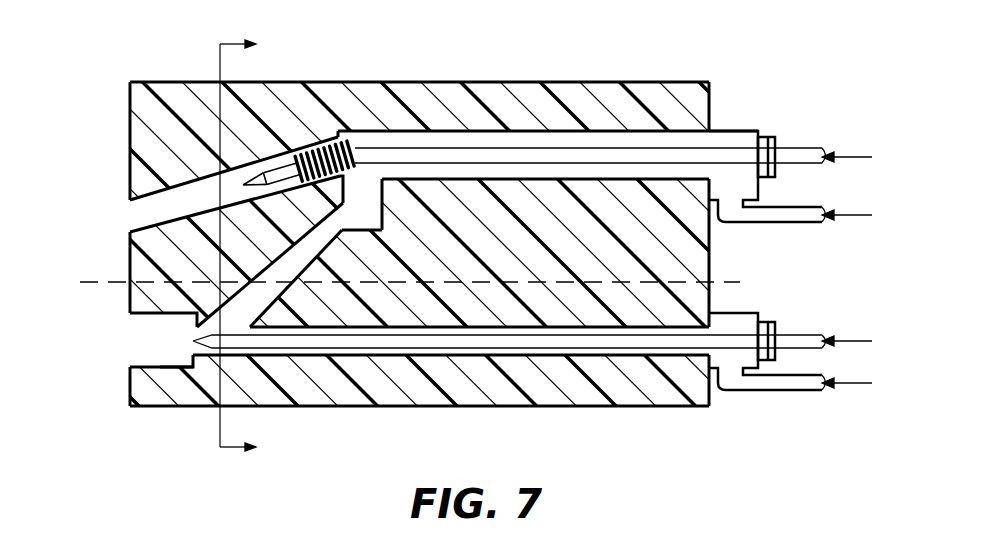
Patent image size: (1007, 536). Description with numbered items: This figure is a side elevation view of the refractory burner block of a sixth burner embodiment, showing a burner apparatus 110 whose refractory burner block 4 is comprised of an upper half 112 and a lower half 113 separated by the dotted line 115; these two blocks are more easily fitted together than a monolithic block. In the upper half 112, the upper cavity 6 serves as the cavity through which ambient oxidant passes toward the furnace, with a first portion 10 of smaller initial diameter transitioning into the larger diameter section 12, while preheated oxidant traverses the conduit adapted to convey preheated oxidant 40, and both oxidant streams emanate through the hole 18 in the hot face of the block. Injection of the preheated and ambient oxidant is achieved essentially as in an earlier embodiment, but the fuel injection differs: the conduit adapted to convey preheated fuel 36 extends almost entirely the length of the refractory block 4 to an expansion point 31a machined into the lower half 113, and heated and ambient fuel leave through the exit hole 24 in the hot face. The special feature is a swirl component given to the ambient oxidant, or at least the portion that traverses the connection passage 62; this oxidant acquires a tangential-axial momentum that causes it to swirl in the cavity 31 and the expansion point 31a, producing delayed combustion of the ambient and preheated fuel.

The burner apparatus 110 is at (503, 238).
The refractory burner block 4 is at (690, 83).
The upper cavity 6 is at (168, 187).
The first portion of cavity 10 is at (488, 134).
The larger diameter section 12 is at (320, 150).
The hole 18 is at (130, 204).
The exit hole 24 is at (130, 365).
The cavity 31 is at (489, 358).
The expansion point 31a is at (180, 370).
The conduit adapted to convey preheated fuel 36 is at (407, 350).
The conduit adapted to convey preheated oxidant 40 is at (406, 150).
The connection passage 62 is at (338, 234).
The upper half 112 is at (709, 262).
The lower half 113 is at (672, 407).
The dotted line 115 is at (114, 280).